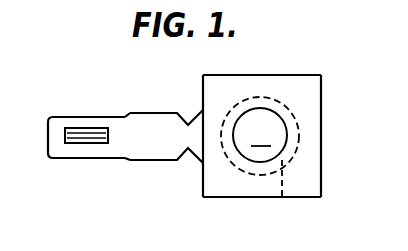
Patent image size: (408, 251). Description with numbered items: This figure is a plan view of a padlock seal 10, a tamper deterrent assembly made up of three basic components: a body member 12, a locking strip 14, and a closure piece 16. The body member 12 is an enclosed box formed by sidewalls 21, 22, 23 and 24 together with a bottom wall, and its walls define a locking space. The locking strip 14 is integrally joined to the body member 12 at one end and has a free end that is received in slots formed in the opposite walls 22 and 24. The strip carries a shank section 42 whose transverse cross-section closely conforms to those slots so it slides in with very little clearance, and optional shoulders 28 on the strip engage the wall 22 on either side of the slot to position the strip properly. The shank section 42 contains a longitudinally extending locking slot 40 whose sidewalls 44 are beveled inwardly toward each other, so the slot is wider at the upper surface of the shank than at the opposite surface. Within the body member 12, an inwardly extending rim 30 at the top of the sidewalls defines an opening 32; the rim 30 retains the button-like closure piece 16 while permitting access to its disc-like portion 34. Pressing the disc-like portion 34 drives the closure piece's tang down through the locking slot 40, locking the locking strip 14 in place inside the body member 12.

The padlock seal 10 is at (188, 137).
The body member 12 is at (264, 137).
The locking strip 14 is at (113, 139).
The closure piece 16 is at (274, 123).
The sidewall 21 is at (258, 75).
The wall 22 is at (203, 80).
The sidewall 23 is at (249, 199).
The wall 24 is at (322, 171).
The shoulders 28 is at (128, 112).
The rim 30 is at (284, 195).
The opening 32 is at (285, 130).
The disc-like portion 34 is at (261, 136).
The locking slot 40 is at (63, 137).
The shank section 42 is at (130, 142).
The sidewalls of the slot 44 is at (80, 128).